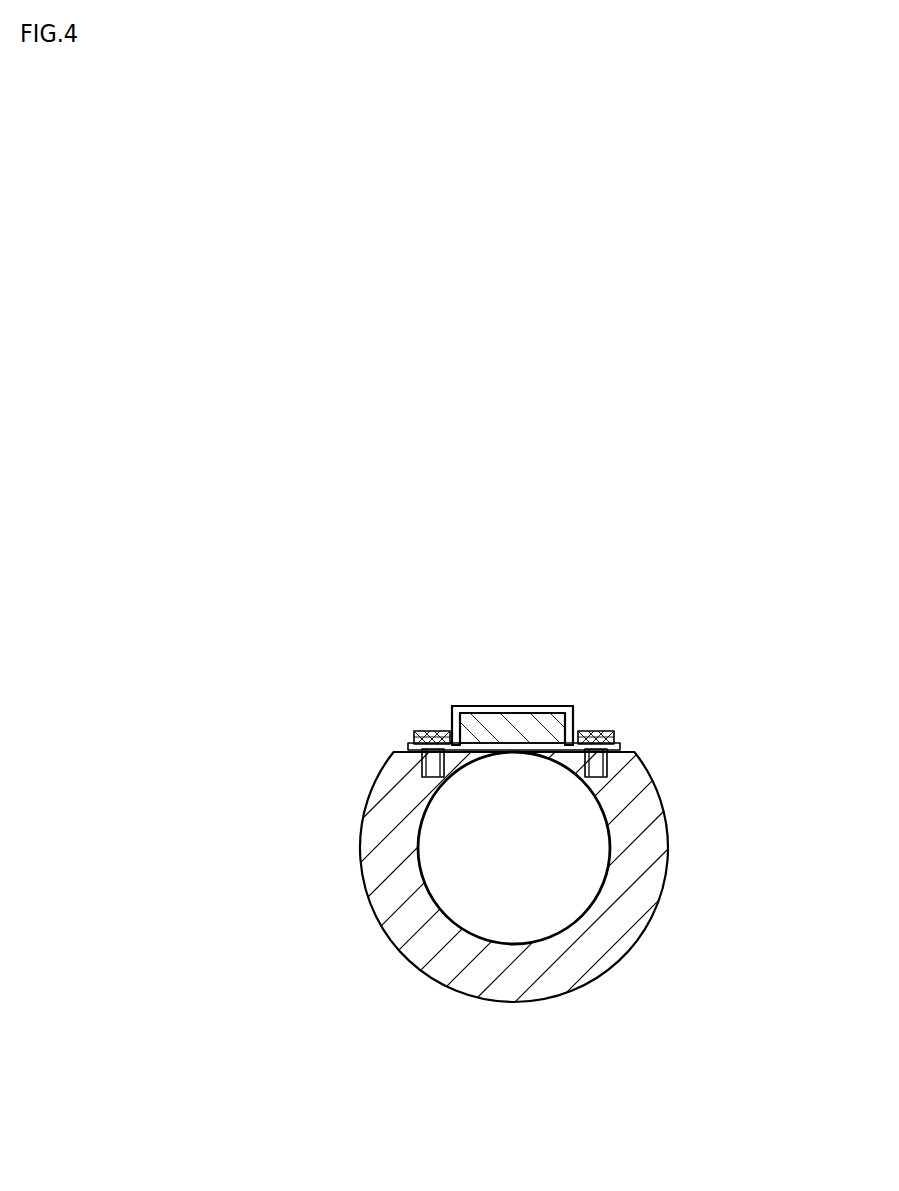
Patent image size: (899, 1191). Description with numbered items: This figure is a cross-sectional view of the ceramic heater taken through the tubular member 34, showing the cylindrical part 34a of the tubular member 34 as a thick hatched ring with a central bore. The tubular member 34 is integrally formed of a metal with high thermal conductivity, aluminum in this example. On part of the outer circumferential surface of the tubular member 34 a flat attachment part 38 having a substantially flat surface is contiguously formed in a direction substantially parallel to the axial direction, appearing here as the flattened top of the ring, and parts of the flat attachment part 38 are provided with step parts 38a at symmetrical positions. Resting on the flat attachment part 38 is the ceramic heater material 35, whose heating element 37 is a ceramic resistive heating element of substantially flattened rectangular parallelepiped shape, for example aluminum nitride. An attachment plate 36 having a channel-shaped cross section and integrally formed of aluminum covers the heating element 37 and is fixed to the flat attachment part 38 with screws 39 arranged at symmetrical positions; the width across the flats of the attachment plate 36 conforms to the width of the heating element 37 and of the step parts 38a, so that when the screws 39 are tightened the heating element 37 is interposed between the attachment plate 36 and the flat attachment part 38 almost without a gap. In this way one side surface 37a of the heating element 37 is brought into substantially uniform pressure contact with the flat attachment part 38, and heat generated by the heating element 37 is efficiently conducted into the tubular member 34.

The tubular member 34 is at (364, 921).
The cylindrical part 34a is at (648, 848).
The ceramic heater material 35 is at (517, 732).
The attachment plate 36 is at (499, 706).
The heating element 37 is at (556, 668).
The side surface 37a is at (475, 715).
The flat attachment part 38 is at (575, 713).
The step part 38a is at (430, 740).
The screw 39 is at (422, 760).